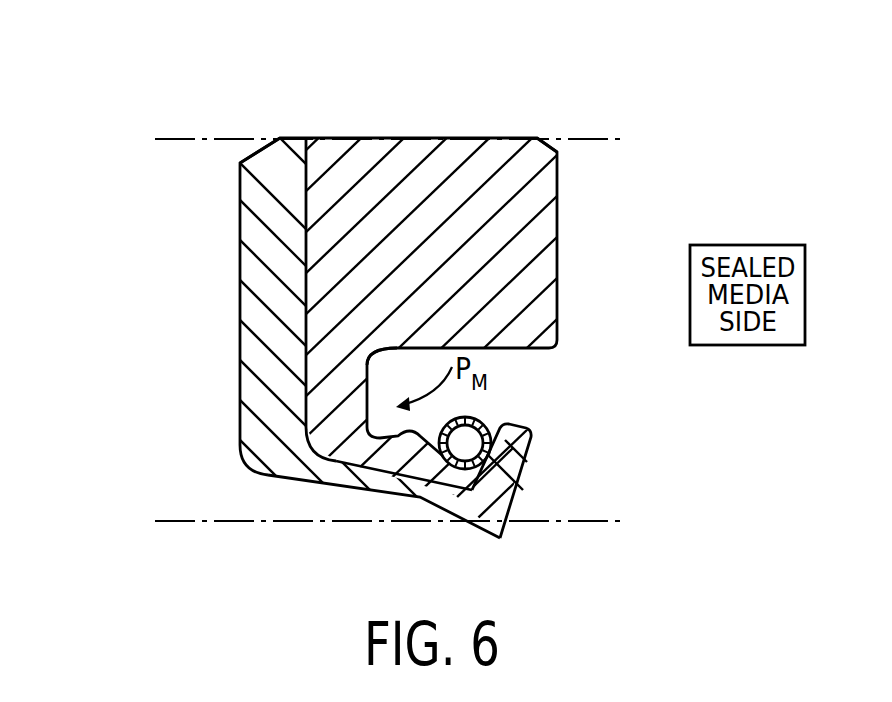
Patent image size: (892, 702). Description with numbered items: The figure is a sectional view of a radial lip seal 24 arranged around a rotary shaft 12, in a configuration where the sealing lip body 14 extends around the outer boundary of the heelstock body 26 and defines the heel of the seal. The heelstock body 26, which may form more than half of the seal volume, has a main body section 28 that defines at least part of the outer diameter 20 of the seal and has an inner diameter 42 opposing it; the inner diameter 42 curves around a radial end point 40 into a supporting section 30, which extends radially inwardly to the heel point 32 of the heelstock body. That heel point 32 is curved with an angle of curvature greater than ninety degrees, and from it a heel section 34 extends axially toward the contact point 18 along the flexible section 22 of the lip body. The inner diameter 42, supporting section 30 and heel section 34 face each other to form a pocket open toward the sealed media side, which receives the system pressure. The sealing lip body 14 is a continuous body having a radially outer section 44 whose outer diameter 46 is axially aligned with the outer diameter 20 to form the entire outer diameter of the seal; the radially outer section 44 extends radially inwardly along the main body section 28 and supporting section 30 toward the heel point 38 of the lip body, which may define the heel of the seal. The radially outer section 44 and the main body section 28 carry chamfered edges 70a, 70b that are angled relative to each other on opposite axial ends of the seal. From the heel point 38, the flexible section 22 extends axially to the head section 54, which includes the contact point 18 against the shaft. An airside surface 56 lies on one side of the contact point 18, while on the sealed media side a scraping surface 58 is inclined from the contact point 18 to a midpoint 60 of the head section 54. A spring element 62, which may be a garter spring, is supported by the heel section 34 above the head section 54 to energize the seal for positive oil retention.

The rotary shaft 12 is at (170, 523).
The sealing lip body 14 is at (347, 473).
The contact point 18 is at (503, 533).
The outer diameter 20 is at (474, 137).
The flexible section 22 is at (423, 490).
The radial lip seal 24 is at (146, 89).
The heelstock body 26 is at (320, 246).
The main body section 28 is at (345, 217).
The supporting section 30 is at (340, 388).
The heel point 32 is at (312, 464).
The heel section 34 is at (390, 460).
The heel point 38 is at (240, 470).
The radial end point 40 is at (377, 343).
The inner diameter 42 is at (497, 347).
The radially outer section 44 is at (272, 294).
The outer diameter 46 is at (293, 137).
The head section 54 is at (522, 462).
The airside surface 56 is at (470, 527).
The scraping surface 58 is at (512, 522).
The midpoint 60 is at (483, 497).
The spring element 62 is at (482, 420).
The chamfered edge 70a is at (243, 161).
The chamfered edge 70b is at (538, 137).